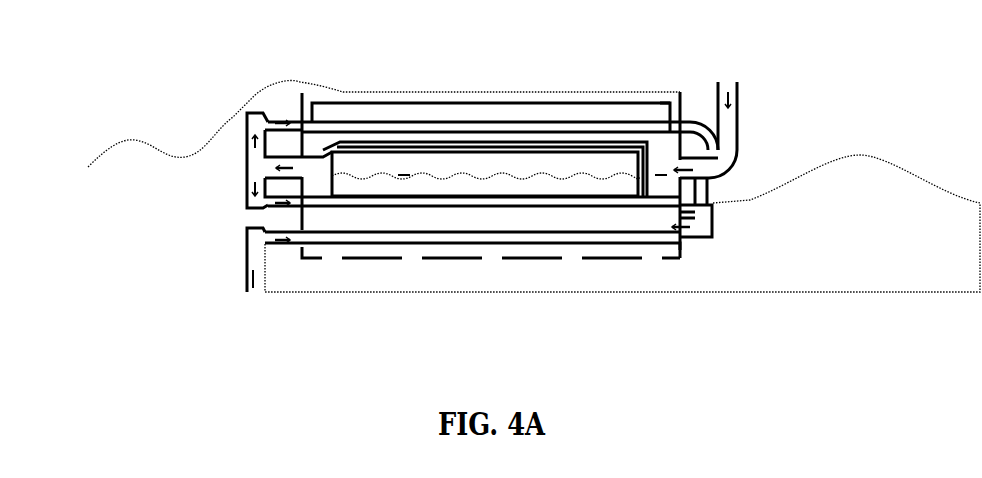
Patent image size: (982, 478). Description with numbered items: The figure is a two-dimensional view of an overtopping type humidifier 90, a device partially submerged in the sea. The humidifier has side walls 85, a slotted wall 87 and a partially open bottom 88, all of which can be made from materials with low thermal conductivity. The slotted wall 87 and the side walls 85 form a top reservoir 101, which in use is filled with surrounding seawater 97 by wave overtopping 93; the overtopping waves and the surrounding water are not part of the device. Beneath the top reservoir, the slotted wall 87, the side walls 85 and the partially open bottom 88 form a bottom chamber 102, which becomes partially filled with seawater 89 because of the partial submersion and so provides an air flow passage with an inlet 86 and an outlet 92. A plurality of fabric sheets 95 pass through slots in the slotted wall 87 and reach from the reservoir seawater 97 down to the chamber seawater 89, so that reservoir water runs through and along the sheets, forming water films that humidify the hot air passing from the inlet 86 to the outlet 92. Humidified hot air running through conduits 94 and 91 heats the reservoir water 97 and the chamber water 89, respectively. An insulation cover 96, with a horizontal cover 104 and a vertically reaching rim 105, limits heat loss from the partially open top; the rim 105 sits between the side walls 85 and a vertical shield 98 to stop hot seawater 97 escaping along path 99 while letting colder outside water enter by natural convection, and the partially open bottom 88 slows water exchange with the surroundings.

The side walls 85 is at (708, 88).
The inlet 86 is at (735, 177).
The slotted wall 87 is at (663, 276).
The partially open bottom 88 is at (472, 290).
The seawater in bottom chamber 89 is at (474, 277).
The overtopping type humidifier 90 is at (622, 164).
The conduit/pipe 91 is at (472, 263).
The outlet 92 is at (227, 198).
The wave overtopping 93 is at (486, 128).
The conduit/pipe 94 is at (485, 111).
The fabric sheets 95 is at (490, 111).
The insulation cover 96 is at (485, 111).
The seawater in top reservoir 97 is at (499, 103).
The vertical shield 98 is at (628, 69).
The path 99 is at (659, 138).
The top reservoir 101 is at (477, 92).
The bottom chamber 102 is at (472, 296).
The horizontal cover 104 is at (479, 74).
The vertically reaching rim 105 is at (384, 108).